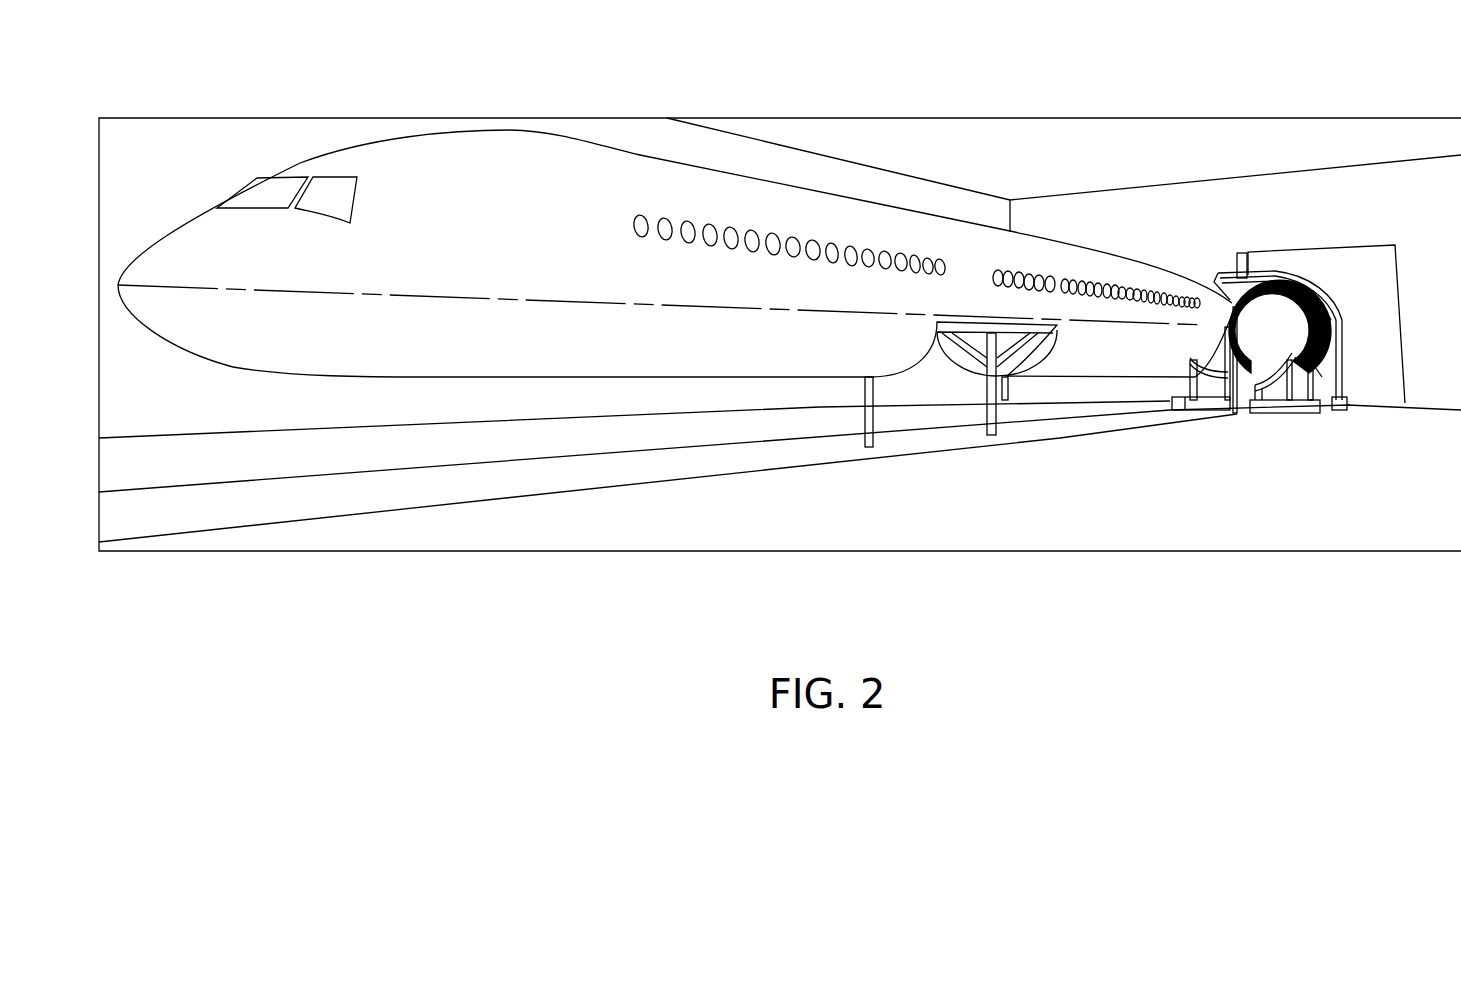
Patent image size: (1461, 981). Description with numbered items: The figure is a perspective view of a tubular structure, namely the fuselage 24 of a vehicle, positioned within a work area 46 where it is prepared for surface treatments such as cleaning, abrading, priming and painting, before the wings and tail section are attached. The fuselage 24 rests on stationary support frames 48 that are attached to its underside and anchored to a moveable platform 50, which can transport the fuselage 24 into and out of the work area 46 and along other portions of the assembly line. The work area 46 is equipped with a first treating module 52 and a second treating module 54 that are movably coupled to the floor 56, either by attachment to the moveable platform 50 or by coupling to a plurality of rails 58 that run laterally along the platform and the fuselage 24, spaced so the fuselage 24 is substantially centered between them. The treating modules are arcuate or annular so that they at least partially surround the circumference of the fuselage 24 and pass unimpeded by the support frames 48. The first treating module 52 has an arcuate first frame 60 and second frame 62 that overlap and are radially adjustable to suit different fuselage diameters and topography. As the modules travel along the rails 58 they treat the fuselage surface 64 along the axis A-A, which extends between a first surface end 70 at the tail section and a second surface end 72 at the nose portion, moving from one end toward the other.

The fuselage 24 is at (666, 206).
The work area 46 is at (1332, 220).
The stationary support frames 48 is at (870, 447).
The moveable platform 50 is at (1073, 428).
The first treating module 52 is at (1223, 277).
The second treating module 54 is at (1333, 307).
The floor 56 is at (535, 525).
The rails 58 is at (287, 480).
The first frame 60 is at (1248, 275).
The second frame 62 is at (1283, 383).
The fuselage surface 64 is at (507, 133).
The first surface end 70 is at (1227, 303).
The second surface end 72 is at (148, 273).